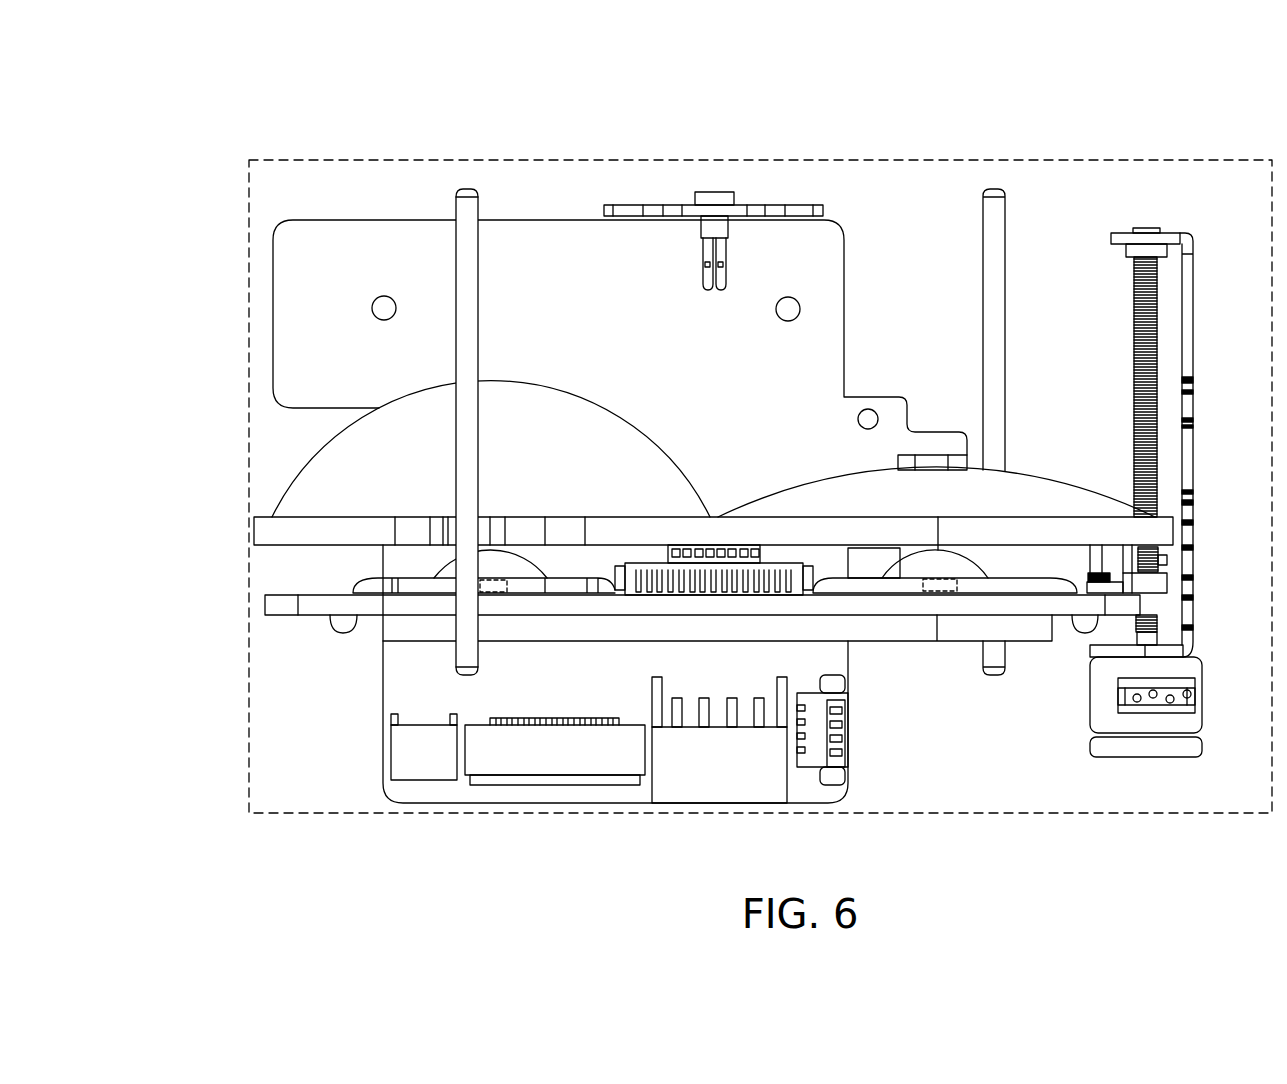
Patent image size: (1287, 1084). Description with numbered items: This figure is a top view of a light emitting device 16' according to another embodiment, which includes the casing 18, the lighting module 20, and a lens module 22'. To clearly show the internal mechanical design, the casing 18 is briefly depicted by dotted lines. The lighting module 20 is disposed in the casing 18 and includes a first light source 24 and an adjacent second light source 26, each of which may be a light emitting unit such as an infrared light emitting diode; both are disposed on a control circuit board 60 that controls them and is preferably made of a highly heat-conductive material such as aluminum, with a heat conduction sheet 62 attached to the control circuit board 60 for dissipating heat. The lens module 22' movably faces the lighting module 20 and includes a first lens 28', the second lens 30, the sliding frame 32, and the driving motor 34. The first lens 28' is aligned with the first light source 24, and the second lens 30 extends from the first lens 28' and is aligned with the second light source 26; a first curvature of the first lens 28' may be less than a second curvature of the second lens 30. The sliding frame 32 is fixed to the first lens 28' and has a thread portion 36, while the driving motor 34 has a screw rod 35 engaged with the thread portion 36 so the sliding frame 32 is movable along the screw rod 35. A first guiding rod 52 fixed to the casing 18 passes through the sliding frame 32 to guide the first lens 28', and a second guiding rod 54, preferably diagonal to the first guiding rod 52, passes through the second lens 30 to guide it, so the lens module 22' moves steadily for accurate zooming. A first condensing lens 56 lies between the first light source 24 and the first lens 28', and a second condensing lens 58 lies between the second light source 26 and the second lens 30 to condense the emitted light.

The light emitting device 16' is at (697, 451).
The casing 18 is at (351, 160).
The lighting module 20 is at (963, 845).
The lens module 22' is at (753, 307).
The first light source 24 is at (942, 593).
The second light source 26 is at (497, 593).
The first lens 28' is at (936, 316).
The second lens 30 is at (520, 418).
The sliding frame 32 is at (1117, 573).
The driving motor 34 is at (1203, 692).
The screw rod 35 is at (1135, 290).
The thread portion 36 is at (1167, 588).
The first guiding rod 52 is at (988, 228).
The second guiding rod 54 is at (468, 200).
The first condensing lens 56 is at (928, 560).
The second condensing lens 58 is at (450, 570).
The control circuit board 60 is at (573, 602).
The heat conduction sheet 62 is at (723, 625).